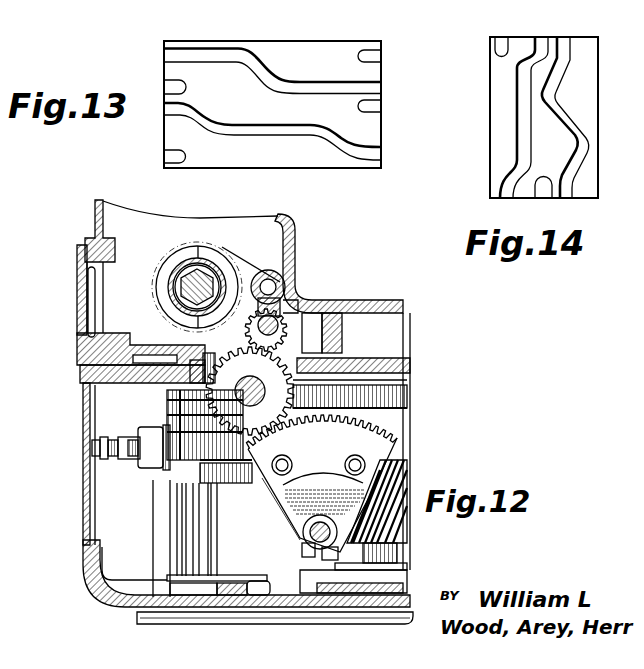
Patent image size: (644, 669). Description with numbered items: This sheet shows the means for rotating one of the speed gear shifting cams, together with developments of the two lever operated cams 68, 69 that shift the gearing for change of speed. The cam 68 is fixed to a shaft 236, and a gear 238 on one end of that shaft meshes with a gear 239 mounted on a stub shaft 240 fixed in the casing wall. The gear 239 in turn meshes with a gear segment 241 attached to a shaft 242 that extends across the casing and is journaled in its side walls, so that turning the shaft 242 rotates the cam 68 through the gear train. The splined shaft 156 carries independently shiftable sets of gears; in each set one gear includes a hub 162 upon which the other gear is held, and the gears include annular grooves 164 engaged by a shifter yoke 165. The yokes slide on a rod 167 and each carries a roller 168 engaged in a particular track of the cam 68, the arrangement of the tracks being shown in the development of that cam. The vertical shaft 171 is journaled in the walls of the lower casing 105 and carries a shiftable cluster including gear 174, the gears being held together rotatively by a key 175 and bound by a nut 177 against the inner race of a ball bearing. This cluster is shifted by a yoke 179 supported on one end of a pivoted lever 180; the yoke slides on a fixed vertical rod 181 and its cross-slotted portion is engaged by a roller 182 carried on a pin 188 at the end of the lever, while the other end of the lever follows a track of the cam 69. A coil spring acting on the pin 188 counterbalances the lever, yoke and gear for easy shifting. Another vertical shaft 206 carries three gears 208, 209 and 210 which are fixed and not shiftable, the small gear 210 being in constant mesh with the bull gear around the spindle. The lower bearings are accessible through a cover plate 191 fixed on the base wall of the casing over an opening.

In FIG. 13, the cam 69 is at (273, 50).
In FIG. 14, the cam 68 is at (520, 48).
In FIG. 12, the cam 68 is at (248, 324).
In FIG. 12, the lower casing 105 is at (402, 587).
In FIG. 12, the shaft 156 is at (170, 300).
In FIG. 12, the hub 162 is at (170, 255).
In FIG. 12, the annular grooves 164 is at (167, 279).
In FIG. 12, the shifter yoke 165 is at (213, 256).
In FIG. 12, the rod 167 is at (285, 281).
In FIG. 12, the roller 168 is at (292, 300).
In FIG. 12, the vertical shaft 171 is at (202, 562).
In FIG. 12, the gear 174 is at (187, 440).
In FIG. 12, the key 175 is at (170, 435).
In FIG. 12, the nut 177 is at (197, 363).
In FIG. 12, the yoke 179 is at (245, 496).
In FIG. 12, the pivoted lever 180 is at (130, 438).
In FIG. 12, the fixed vertical rod 181 is at (160, 528).
In FIG. 12, the roller 182 is at (133, 448).
In FIG. 12, the pin 188 is at (93, 445).
In FIG. 12, the cover plate 191 is at (343, 615).
In FIG. 12, the vertical shaft 206 is at (367, 557).
In FIG. 12, the gear 208 is at (402, 390).
In FIG. 12, the gear 209 is at (405, 470).
In FIG. 12, the small gear 210 is at (400, 522).
In FIG. 12, the shaft 236 is at (250, 391).
In FIG. 12, the gear 238 is at (288, 332).
In FIG. 12, the gear 239 is at (237, 363).
In FIG. 12, the stub shaft 240 is at (249, 399).
In FIG. 12, the gear segment 241 is at (257, 468).
In FIG. 12, the shaft 242 is at (303, 532).